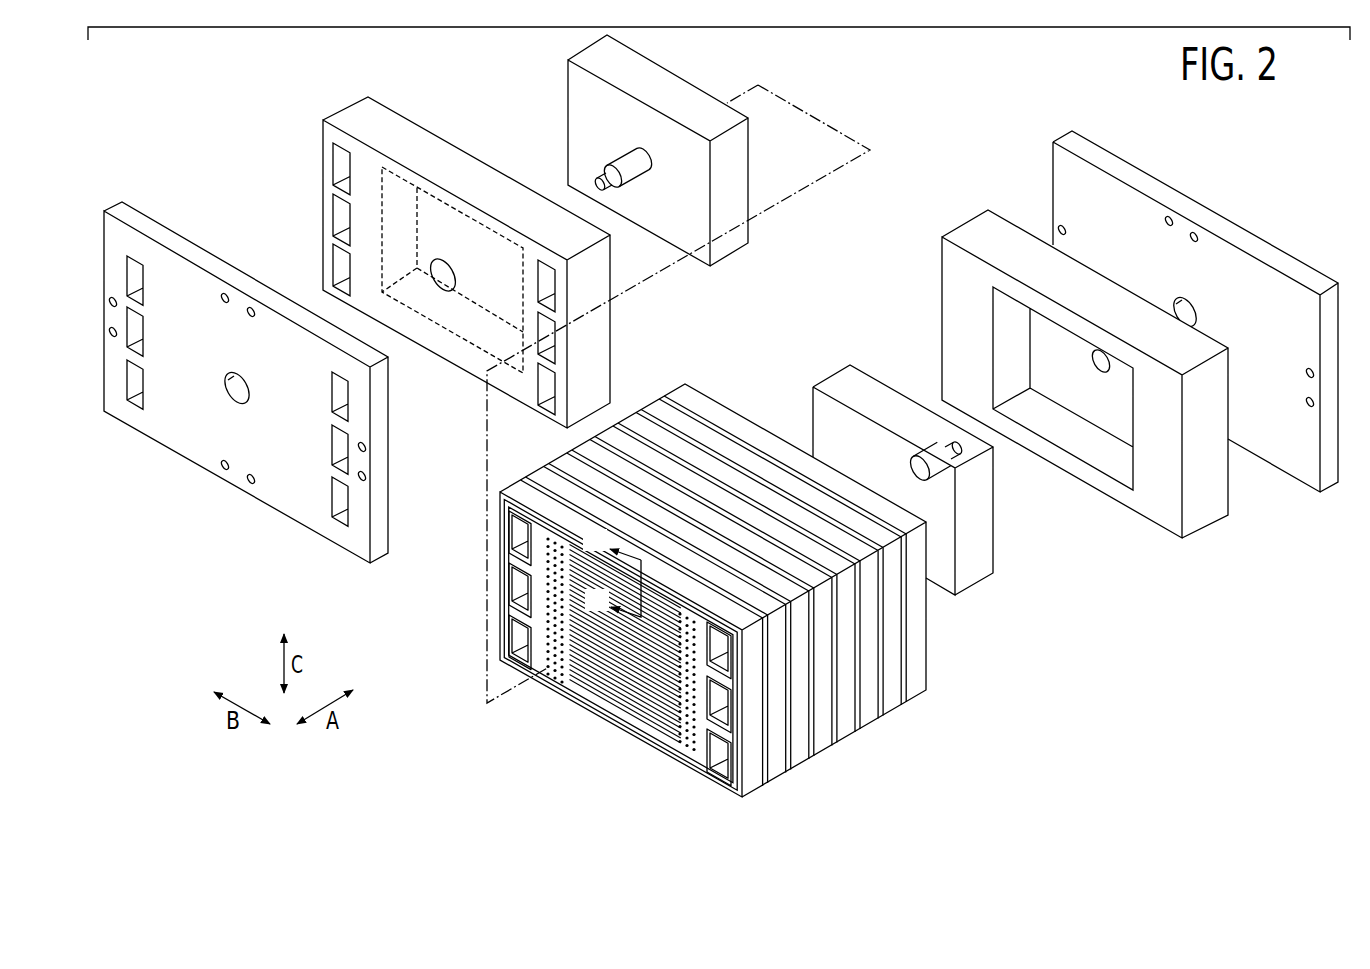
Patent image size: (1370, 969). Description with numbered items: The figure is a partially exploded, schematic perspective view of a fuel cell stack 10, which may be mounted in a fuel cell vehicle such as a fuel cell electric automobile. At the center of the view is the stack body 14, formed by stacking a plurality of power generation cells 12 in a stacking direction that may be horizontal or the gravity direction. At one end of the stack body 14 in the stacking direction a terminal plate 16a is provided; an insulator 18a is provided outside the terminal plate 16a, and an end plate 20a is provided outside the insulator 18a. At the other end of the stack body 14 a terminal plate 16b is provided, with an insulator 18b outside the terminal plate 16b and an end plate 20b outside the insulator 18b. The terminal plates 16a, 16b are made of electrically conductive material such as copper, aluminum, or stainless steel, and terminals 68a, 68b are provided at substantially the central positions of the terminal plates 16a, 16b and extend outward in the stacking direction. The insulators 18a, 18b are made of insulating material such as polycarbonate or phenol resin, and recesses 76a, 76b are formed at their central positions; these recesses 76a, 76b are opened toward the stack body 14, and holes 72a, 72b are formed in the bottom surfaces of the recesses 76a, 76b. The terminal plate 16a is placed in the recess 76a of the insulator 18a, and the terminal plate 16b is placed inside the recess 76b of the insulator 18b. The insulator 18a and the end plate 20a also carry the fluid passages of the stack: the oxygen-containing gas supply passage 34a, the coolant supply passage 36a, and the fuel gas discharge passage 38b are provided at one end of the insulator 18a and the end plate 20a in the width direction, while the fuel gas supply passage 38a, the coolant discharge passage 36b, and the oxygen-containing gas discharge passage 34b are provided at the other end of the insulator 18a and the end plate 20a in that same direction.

The fuel cell stack 10 is at (1285, 124).
The power generation cell 12 is at (897, 712).
The stack body 14 is at (733, 590).
The terminal plate 16a is at (629, 148).
The terminal plate 16b is at (927, 457).
The insulator 18a is at (466, 231).
The insulator 18b is at (1085, 353).
The end plate 20a is at (246, 352).
The end plate 20b is at (1058, 133).
The oxygen-containing gas supply passage 34a is at (331, 381).
The oxygen-containing gas discharge passage 34b is at (144, 377).
The coolant supply passage 36a is at (331, 430).
The coolant discharge passage 36b is at (144, 325).
The fuel gas supply passage 38a is at (144, 273).
The fuel gas discharge passage 38b is at (331, 483).
The terminal 68a is at (592, 180).
The terminal 68b is at (965, 452).
The hole 72a is at (443, 289).
The hole 72b is at (1093, 365).
The recess 76a is at (487, 322).
The recess 76b is at (1123, 463).